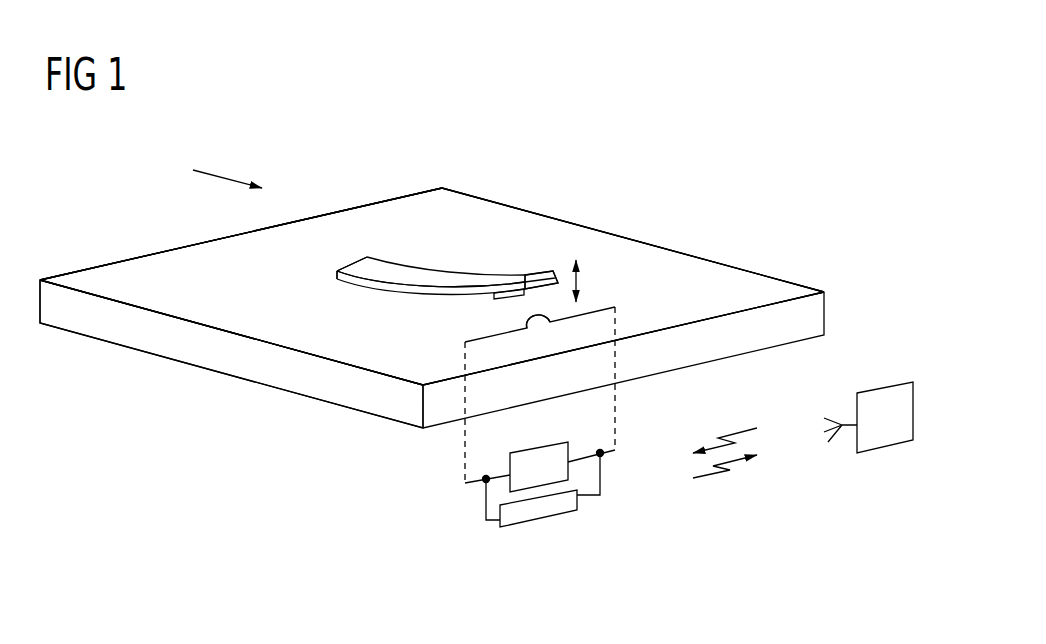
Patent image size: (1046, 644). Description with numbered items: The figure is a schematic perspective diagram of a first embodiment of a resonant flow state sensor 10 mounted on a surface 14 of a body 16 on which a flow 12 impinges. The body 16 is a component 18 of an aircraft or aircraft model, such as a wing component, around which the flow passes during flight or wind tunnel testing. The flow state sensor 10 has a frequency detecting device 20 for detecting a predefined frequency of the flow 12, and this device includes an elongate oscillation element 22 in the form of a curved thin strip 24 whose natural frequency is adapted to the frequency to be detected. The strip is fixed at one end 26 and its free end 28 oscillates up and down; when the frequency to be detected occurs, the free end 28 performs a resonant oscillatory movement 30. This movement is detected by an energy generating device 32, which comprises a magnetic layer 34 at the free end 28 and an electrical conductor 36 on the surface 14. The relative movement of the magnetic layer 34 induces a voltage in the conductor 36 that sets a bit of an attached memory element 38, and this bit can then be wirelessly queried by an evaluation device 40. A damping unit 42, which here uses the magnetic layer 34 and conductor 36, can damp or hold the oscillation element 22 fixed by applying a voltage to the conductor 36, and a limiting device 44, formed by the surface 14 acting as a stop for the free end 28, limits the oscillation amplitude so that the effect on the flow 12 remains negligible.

The flow state sensor 10 is at (700, 167).
The flow 12 is at (218, 173).
The surface 14 is at (183, 258).
The body 16 is at (207, 355).
The component 18 is at (93, 253).
The frequency detecting device 20 is at (352, 205).
The oscillation element 22 is at (458, 263).
The curved thin strip 24 is at (412, 283).
The fixed end 26 is at (337, 283).
The free end 28 is at (554, 257).
The oscillatory movement 30 is at (578, 280).
The energy generating device 32 is at (426, 311).
The magnetic layer 34 is at (513, 298).
The electrical conductor 36 is at (545, 330).
The memory element 38 is at (572, 472).
The evaluation device 40 is at (882, 446).
The damping unit 42 is at (545, 530).
The limiting device 44 is at (510, 340).